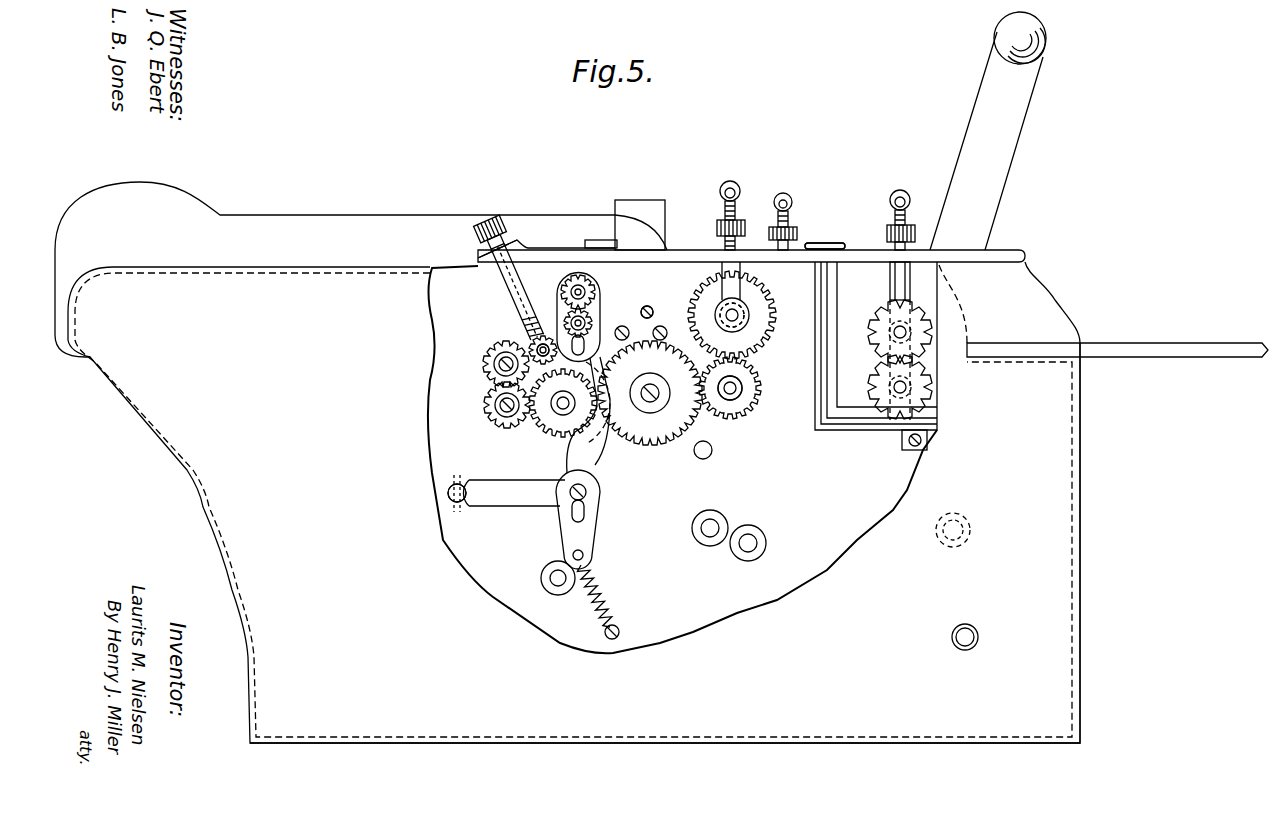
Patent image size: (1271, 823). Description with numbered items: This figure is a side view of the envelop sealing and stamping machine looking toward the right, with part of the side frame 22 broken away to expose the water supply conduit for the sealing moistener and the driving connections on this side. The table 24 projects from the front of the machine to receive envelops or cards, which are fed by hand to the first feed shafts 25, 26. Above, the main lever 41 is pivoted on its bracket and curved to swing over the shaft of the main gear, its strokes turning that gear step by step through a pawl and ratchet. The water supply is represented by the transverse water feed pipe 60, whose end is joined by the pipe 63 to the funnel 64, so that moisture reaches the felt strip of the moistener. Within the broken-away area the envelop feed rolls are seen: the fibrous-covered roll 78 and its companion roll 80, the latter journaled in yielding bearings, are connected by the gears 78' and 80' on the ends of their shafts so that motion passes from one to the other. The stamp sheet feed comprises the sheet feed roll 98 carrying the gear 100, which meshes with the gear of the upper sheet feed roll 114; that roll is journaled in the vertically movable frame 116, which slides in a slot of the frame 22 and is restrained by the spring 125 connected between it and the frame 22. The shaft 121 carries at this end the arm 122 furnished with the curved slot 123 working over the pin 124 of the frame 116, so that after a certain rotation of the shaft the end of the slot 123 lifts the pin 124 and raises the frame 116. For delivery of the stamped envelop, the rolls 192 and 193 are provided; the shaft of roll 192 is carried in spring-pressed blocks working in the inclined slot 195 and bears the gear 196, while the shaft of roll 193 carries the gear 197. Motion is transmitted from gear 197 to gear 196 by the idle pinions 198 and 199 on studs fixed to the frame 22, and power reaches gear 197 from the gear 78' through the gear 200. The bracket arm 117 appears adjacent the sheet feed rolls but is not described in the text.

The side frame 22 is at (665, 543).
The table 24 is at (1196, 345).
The first feed shaft 25 is at (907, 387).
The first feed shaft 26 is at (897, 330).
The main lever 41 is at (988, 131).
The transverse water feed pipe 60 is at (930, 427).
The pipe 63 is at (857, 428).
The funnel 64 is at (832, 245).
The roll 78 is at (739, 404).
The gear 78' is at (759, 387).
The companion roll 80 is at (748, 315).
The gear 80' is at (764, 323).
The sheet feed roll 98 is at (596, 325).
The gear 100 is at (666, 321).
The upper sheet feed roll 114 is at (594, 290).
The vertically movable frame 116 is at (557, 298).
The bracket arm 117 is at (578, 275).
The shaft 121 is at (453, 498).
The arm 122 is at (492, 503).
The curved slot 123 is at (582, 515).
The pin 124 is at (590, 492).
The spring 125 is at (602, 584).
The roll 192 is at (530, 348).
The roll 193 is at (563, 412).
The inclined slot 195 is at (517, 322).
The gear 196 is at (528, 350).
The gear 197 is at (547, 423).
The idle pinion 198 is at (502, 422).
The idle pinion 199 is at (492, 372).
The gear 200 is at (655, 433).